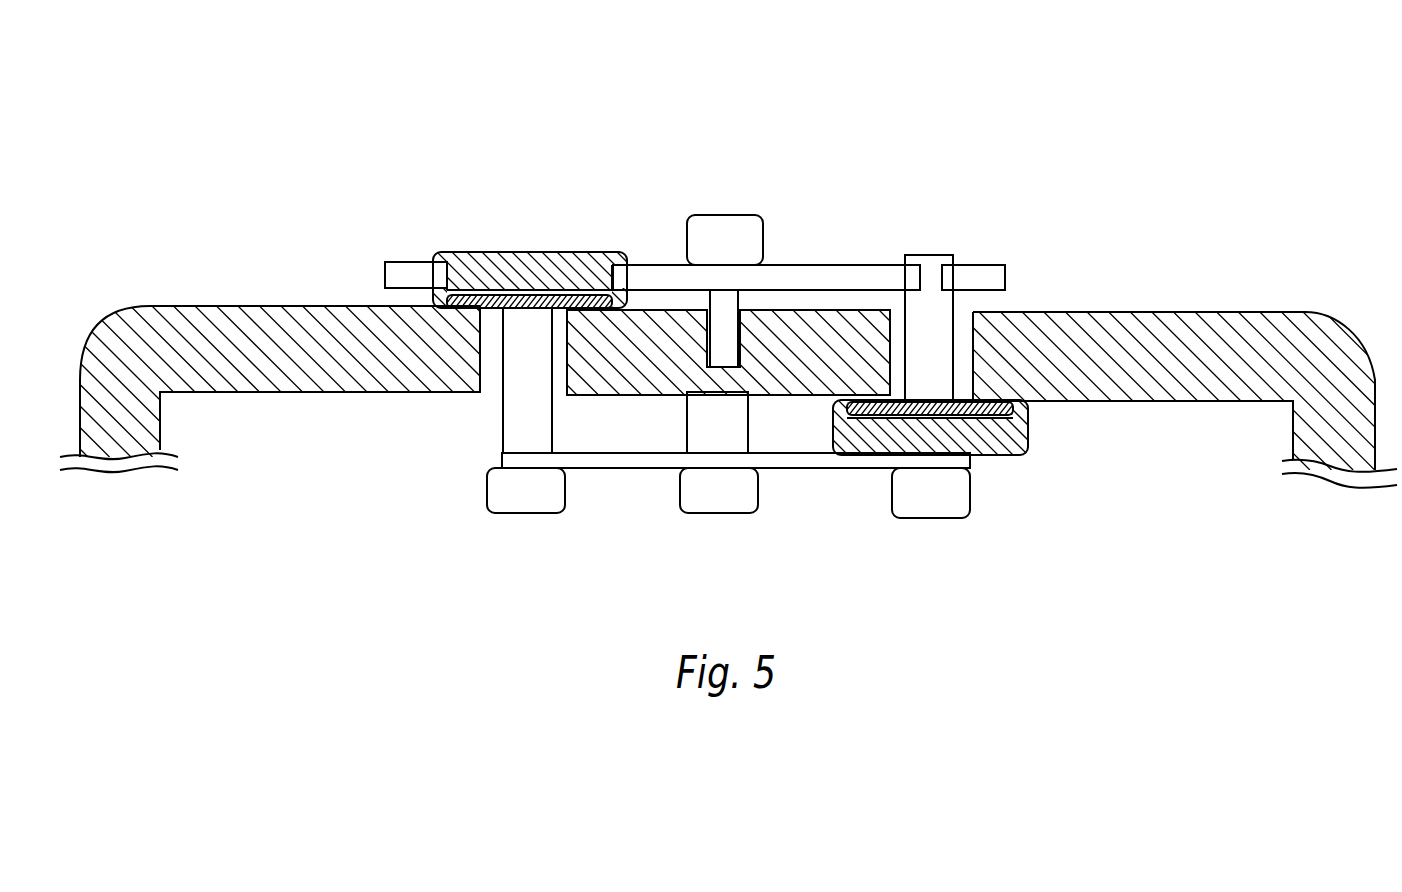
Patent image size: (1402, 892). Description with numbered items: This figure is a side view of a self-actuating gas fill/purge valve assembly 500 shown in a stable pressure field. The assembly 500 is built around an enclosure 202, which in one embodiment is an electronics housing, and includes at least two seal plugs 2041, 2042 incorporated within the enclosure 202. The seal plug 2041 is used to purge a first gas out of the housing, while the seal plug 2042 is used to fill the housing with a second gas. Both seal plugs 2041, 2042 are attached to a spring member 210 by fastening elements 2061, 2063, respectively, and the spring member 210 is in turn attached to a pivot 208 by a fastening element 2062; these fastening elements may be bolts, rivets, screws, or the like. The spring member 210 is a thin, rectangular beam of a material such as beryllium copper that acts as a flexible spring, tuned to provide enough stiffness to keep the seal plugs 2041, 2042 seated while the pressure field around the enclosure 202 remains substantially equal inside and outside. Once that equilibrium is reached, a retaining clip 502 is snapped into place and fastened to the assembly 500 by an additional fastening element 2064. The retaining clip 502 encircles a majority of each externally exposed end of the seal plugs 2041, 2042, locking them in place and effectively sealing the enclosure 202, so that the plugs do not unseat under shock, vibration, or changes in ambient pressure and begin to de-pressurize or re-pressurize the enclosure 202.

The enclosure 202 is at (222, 305).
The seal plug 2041 is at (492, 252).
The seal plug 2042 is at (1028, 434).
The fastening element 2061 is at (512, 515).
The fastening element 2062 is at (710, 515).
The fastening element 2063 is at (930, 519).
The fastening element 2064 is at (767, 224).
The pivot 208 is at (687, 411).
The spring member 210 is at (800, 468).
The self-actuating gas fill/purge valve assembly 500 is at (1189, 170).
The retaining clip 502 is at (1007, 280).